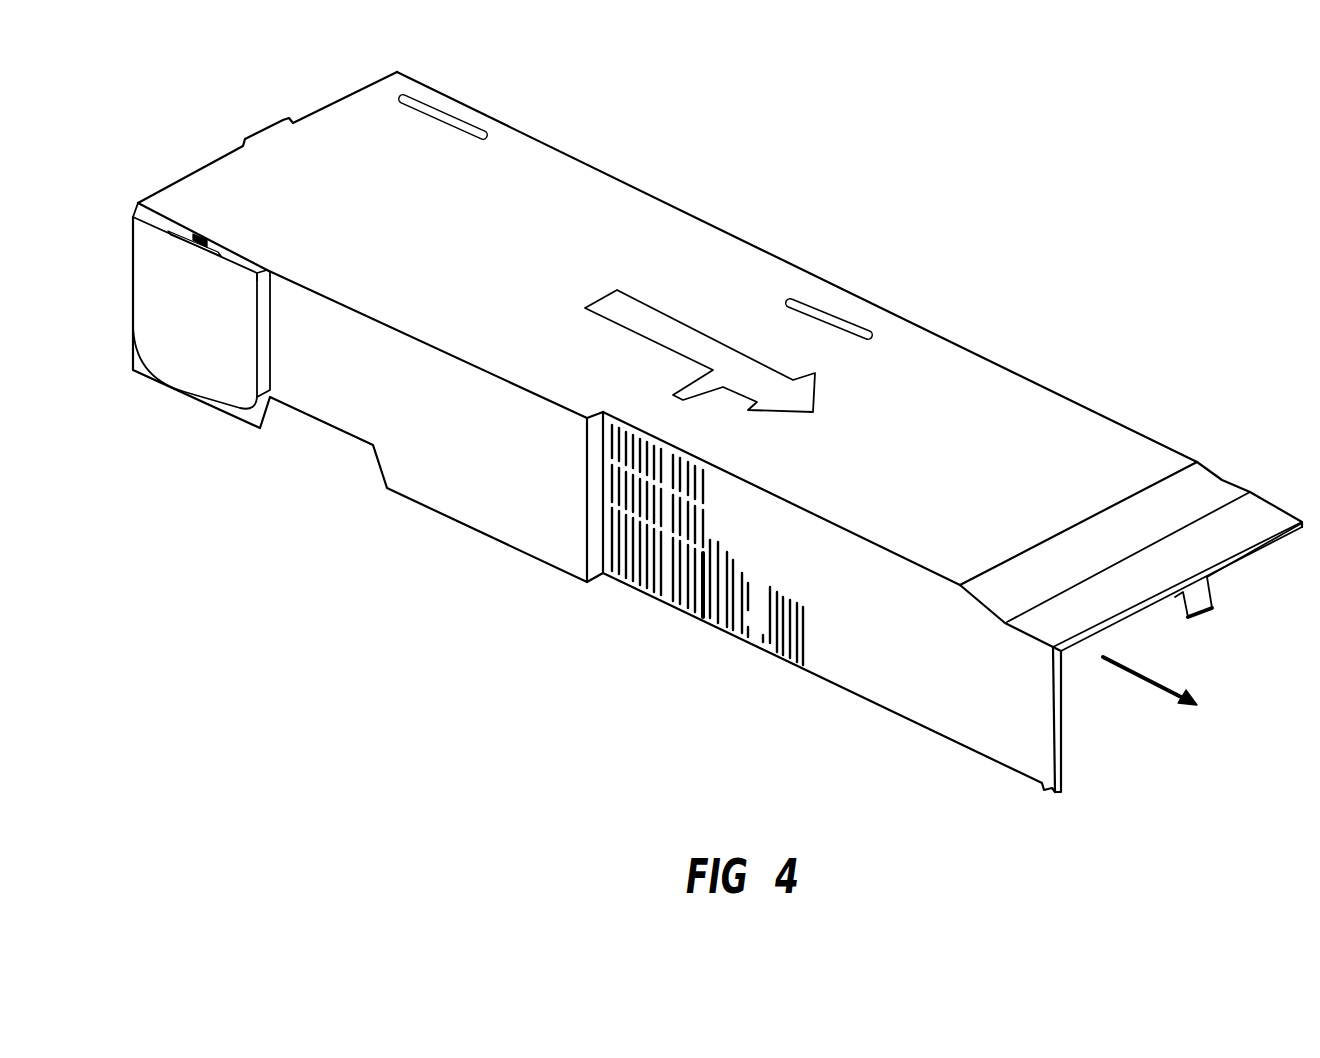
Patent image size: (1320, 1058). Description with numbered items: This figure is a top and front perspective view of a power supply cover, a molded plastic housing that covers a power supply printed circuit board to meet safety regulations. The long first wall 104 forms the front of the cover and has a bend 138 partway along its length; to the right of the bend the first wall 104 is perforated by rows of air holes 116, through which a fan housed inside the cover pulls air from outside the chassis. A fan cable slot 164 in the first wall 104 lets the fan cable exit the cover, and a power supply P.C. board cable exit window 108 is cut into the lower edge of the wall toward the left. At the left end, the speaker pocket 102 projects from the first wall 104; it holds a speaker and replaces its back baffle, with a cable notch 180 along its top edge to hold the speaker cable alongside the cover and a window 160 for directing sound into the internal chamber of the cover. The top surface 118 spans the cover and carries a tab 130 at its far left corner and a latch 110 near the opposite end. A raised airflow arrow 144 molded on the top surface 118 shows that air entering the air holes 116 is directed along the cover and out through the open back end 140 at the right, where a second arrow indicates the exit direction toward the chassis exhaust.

The speaker pocket 102 is at (198, 385).
The first wall 104 is at (735, 547).
The power supply P.C. board cable exit window 108 is at (312, 438).
The latch 110 is at (1213, 612).
The air holes 116 is at (790, 657).
The top surface 118 is at (597, 213).
The tab 130 is at (265, 130).
The bend 138 is at (593, 412).
The back end 140 is at (1185, 695).
The airflow arrow 144 is at (683, 322).
The window 160 is at (223, 240).
The fan cable slot 164 is at (700, 617).
The cable notch 180 is at (273, 272).